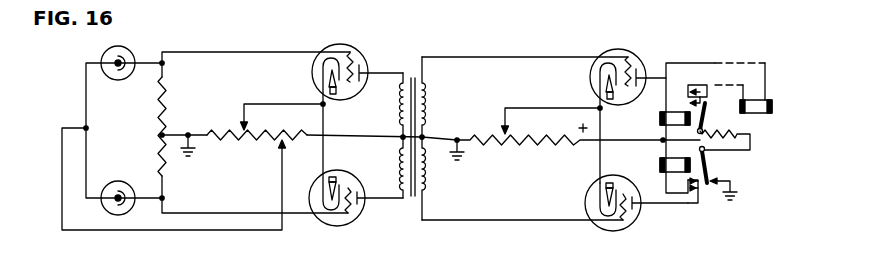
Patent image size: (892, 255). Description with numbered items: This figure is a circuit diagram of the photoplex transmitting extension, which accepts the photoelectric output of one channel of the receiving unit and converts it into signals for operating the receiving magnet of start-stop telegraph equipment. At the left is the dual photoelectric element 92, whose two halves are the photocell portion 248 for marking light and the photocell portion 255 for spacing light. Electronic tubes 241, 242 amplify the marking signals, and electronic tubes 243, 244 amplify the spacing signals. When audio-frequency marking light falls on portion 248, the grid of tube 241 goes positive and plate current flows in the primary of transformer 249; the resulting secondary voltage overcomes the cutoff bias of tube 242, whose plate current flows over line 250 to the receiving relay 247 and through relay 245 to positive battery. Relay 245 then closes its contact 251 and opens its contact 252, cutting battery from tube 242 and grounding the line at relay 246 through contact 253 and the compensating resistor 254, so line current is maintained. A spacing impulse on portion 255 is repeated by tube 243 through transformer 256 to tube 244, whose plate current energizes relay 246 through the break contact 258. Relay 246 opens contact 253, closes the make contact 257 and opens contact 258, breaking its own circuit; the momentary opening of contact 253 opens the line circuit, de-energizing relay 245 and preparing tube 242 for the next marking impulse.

The photoelectric element 92 is at (136, 86).
The electronic tube 241 is at (312, 66).
The electronic tube 242 is at (631, 50).
The electronic tube 243 is at (344, 174).
The electronic tube 244 is at (586, 203).
The relay 245 is at (664, 121).
The relay 246 is at (664, 164).
The receiving relay 247 is at (760, 113).
The photocell portion 248 is at (105, 53).
The transformer 249 is at (413, 78).
The line 250 is at (712, 62).
The contact 251 is at (722, 116).
The contact 252 is at (705, 83).
The contact 253 is at (713, 178).
The compensating resistor 254 is at (718, 146).
The photocell portion 255 is at (108, 213).
The transformer 256 is at (413, 196).
The make contact 257 is at (705, 190).
The break contact 258 is at (695, 205).